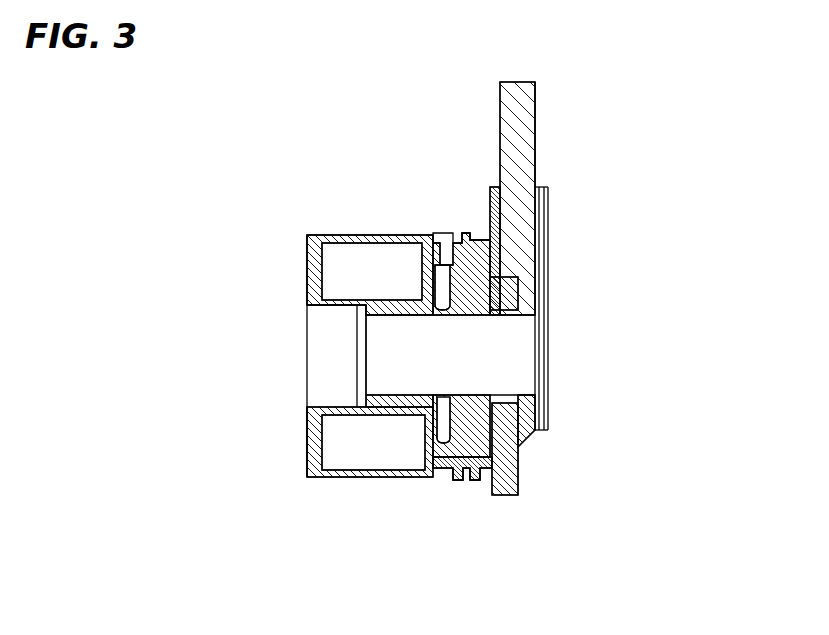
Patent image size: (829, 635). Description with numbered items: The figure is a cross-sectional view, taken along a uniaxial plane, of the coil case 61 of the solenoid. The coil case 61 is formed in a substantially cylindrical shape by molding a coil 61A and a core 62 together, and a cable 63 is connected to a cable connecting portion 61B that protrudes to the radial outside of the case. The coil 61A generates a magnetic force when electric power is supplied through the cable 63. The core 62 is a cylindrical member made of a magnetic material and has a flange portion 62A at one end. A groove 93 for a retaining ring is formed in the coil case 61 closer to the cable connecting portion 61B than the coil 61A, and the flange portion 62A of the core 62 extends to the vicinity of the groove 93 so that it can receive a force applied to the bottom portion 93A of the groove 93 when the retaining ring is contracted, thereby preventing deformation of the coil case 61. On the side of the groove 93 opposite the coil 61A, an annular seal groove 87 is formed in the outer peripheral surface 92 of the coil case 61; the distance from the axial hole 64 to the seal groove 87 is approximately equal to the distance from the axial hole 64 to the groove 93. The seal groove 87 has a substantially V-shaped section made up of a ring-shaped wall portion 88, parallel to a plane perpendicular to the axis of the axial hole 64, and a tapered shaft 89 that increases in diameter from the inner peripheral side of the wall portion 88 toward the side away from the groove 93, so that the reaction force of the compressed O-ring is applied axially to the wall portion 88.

The coil case 61 is at (316, 174).
The coil 61A is at (330, 448).
The cable connecting portion 61B is at (548, 297).
The core 62 is at (373, 423).
The flange portion 62A is at (423, 440).
The cable 63 is at (520, 140).
The axial hole 64 is at (548, 337).
The seal groove 87 is at (480, 232).
The wall portion 88 is at (473, 483).
The tapered shaft 89 is at (483, 490).
The outer peripheral surface 92 is at (437, 480).
The groove 93 is at (457, 230).
The bottom portion 93A is at (455, 482).